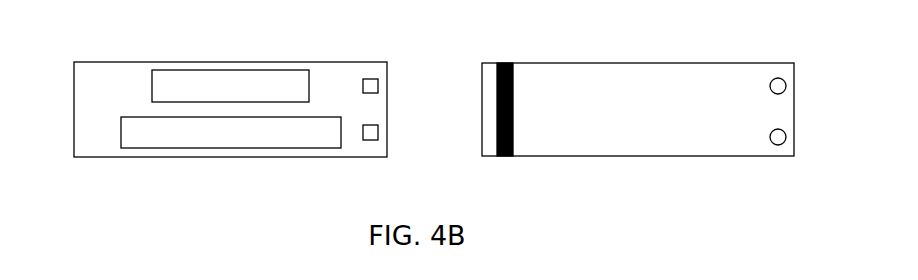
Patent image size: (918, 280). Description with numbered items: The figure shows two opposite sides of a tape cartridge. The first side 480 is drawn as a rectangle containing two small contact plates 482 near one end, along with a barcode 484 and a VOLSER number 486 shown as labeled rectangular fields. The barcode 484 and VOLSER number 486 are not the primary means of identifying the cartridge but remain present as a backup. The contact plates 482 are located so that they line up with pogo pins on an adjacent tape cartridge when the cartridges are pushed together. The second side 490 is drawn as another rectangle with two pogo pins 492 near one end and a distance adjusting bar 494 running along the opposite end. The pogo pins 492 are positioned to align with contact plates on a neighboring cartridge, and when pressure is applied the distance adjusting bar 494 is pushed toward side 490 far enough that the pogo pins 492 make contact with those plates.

The side 480 is at (73, 110).
The contact plates 482 is at (380, 85).
The barcode 484 is at (231, 132).
The VOLSER number 486 is at (230, 86).
The side 490 is at (638, 62).
The pogo pins 492 is at (787, 86).
The distance adjusting bar 494 is at (513, 118).